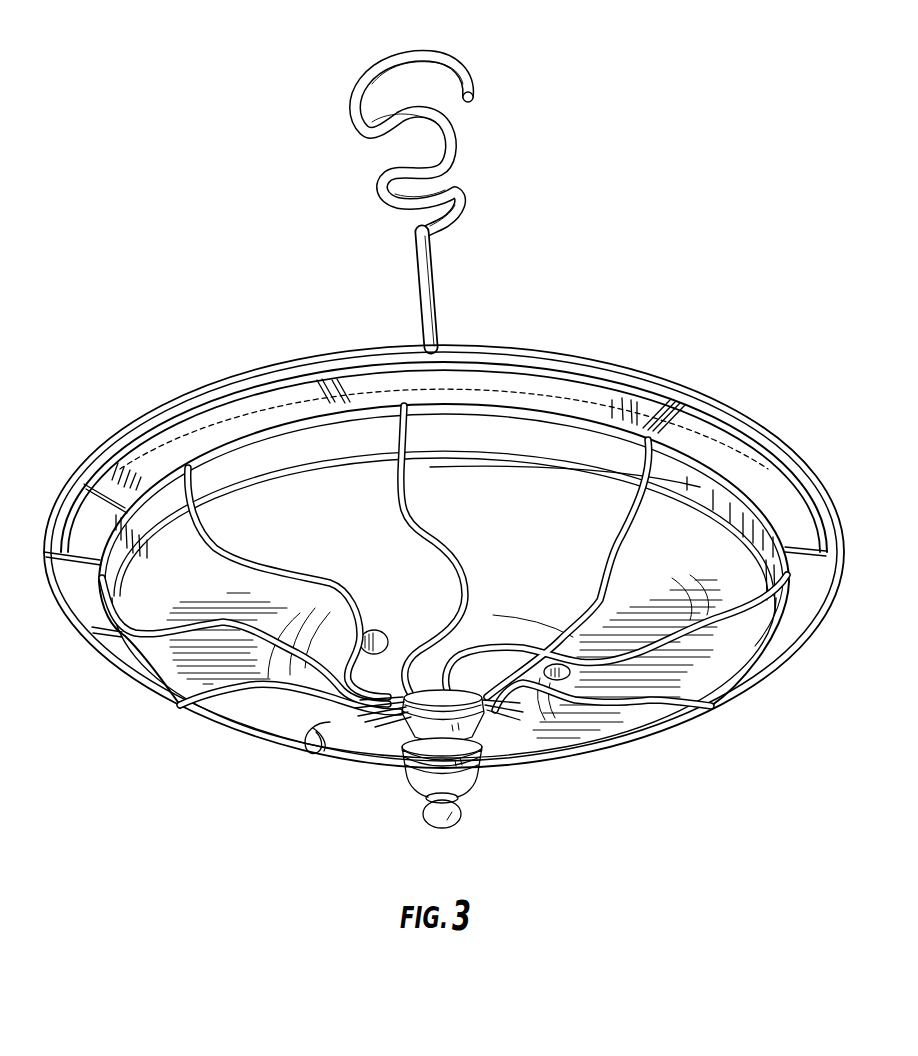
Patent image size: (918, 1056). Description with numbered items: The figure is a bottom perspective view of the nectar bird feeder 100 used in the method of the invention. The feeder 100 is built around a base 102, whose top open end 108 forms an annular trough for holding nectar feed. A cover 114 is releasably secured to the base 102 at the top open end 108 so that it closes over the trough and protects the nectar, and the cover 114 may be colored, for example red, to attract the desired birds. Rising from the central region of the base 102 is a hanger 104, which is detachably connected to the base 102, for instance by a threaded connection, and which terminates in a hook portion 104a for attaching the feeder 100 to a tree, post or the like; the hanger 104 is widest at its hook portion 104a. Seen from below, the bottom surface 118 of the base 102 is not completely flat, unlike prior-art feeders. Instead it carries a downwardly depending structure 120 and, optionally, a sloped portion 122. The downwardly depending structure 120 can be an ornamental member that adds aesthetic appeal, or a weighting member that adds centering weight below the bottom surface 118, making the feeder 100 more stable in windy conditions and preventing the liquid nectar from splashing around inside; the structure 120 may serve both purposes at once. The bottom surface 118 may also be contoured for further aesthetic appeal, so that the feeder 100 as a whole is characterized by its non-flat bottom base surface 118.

The bird feeder 100 is at (535, 296).
The base 102 is at (645, 630).
The hanger 104 is at (423, 263).
The hook portion 104a is at (440, 58).
The top open end 108 is at (262, 378).
The cover 114 is at (684, 397).
The bottom surface 118 is at (562, 720).
The downwardly depending structure 120 is at (463, 790).
The sloped portion 122 is at (313, 730).